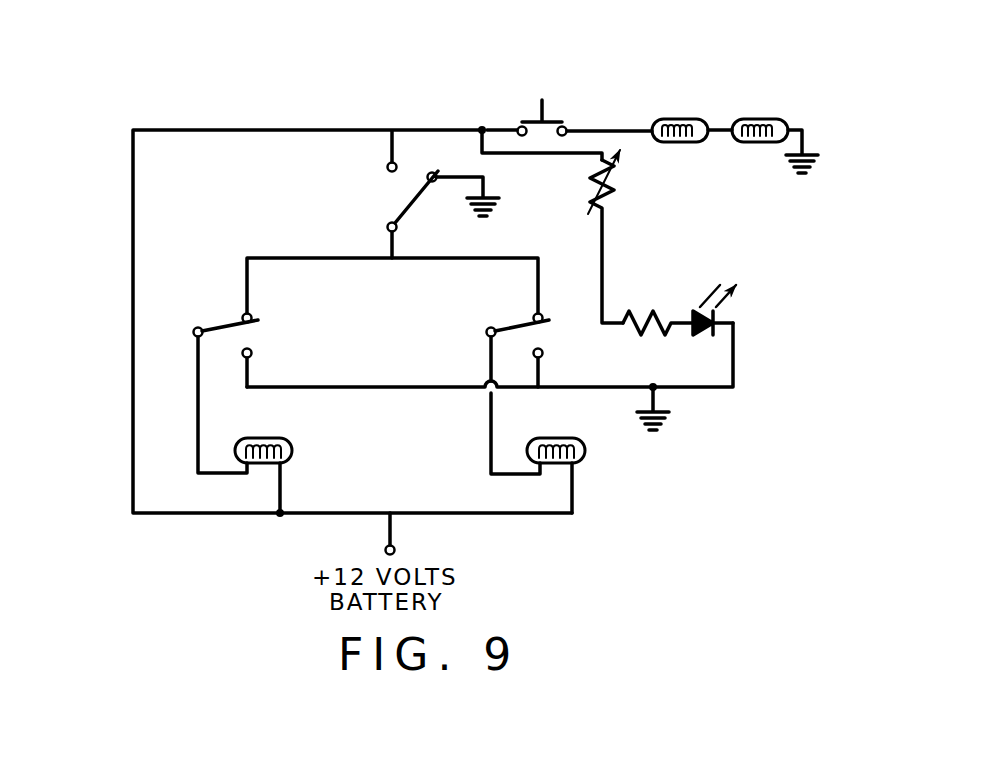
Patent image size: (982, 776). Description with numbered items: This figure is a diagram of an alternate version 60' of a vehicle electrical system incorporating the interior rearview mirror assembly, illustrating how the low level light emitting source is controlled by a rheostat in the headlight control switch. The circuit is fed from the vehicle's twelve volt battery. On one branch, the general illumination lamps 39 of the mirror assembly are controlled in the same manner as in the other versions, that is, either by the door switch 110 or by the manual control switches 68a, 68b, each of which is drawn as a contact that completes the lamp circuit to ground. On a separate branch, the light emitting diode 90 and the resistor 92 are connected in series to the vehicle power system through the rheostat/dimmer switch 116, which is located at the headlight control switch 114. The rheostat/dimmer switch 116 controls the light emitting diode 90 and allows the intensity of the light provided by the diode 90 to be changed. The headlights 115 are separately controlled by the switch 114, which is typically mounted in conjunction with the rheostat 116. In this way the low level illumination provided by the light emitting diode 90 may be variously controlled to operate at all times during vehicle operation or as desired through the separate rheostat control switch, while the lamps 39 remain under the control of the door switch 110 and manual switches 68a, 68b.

The vehicle electrical system version 60' is at (303, 340).
The door switch 110 is at (372, 195).
The headlight control switch 114 is at (557, 100).
The headlights 115 is at (755, 120).
The rheostat/dimmer switch 116 is at (628, 178).
The manual control switch 68a is at (260, 339).
The manual control switch 68b is at (555, 338).
The resistor 92 is at (652, 300).
The light emitting diode 90 is at (756, 280).
The general illumination lamps 39 is at (290, 440).